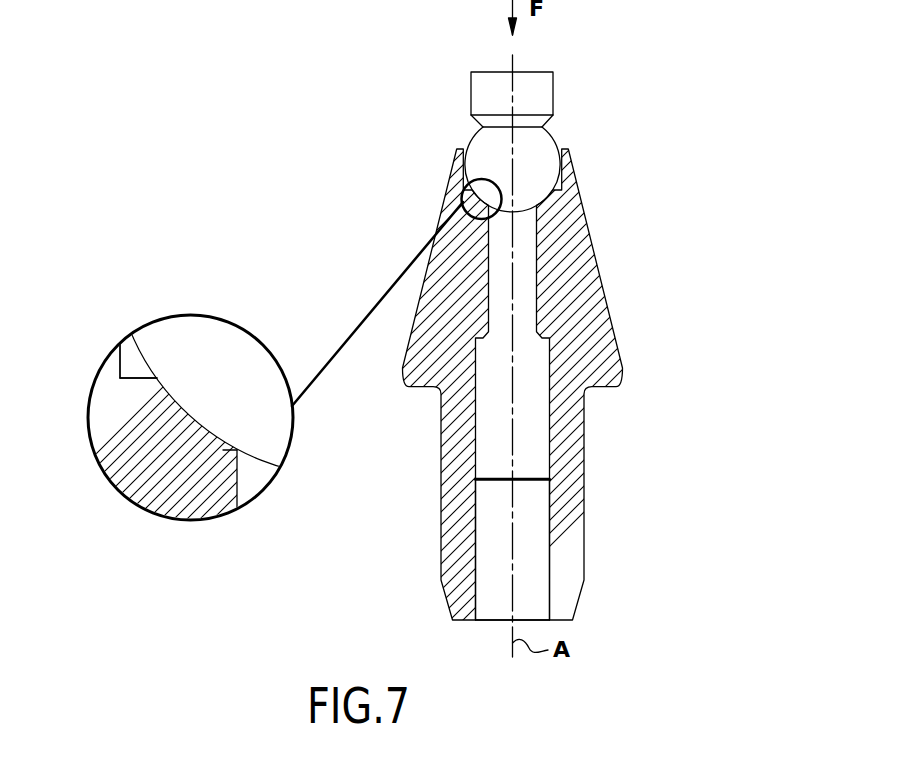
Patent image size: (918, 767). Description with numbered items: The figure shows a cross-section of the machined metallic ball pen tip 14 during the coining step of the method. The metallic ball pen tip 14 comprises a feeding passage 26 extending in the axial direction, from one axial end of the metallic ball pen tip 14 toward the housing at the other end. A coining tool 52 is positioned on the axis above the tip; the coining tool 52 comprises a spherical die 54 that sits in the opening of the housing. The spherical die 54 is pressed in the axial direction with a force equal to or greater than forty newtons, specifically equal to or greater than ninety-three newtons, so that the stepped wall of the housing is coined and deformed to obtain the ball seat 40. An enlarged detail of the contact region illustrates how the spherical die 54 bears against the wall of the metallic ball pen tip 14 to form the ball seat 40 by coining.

The metallic ball pen tip 14 is at (617, 370).
The feeding passage 26 is at (533, 565).
The ball seat 40 is at (152, 404).
The coining tool 52 is at (577, 93).
The spherical die 54 is at (528, 180).